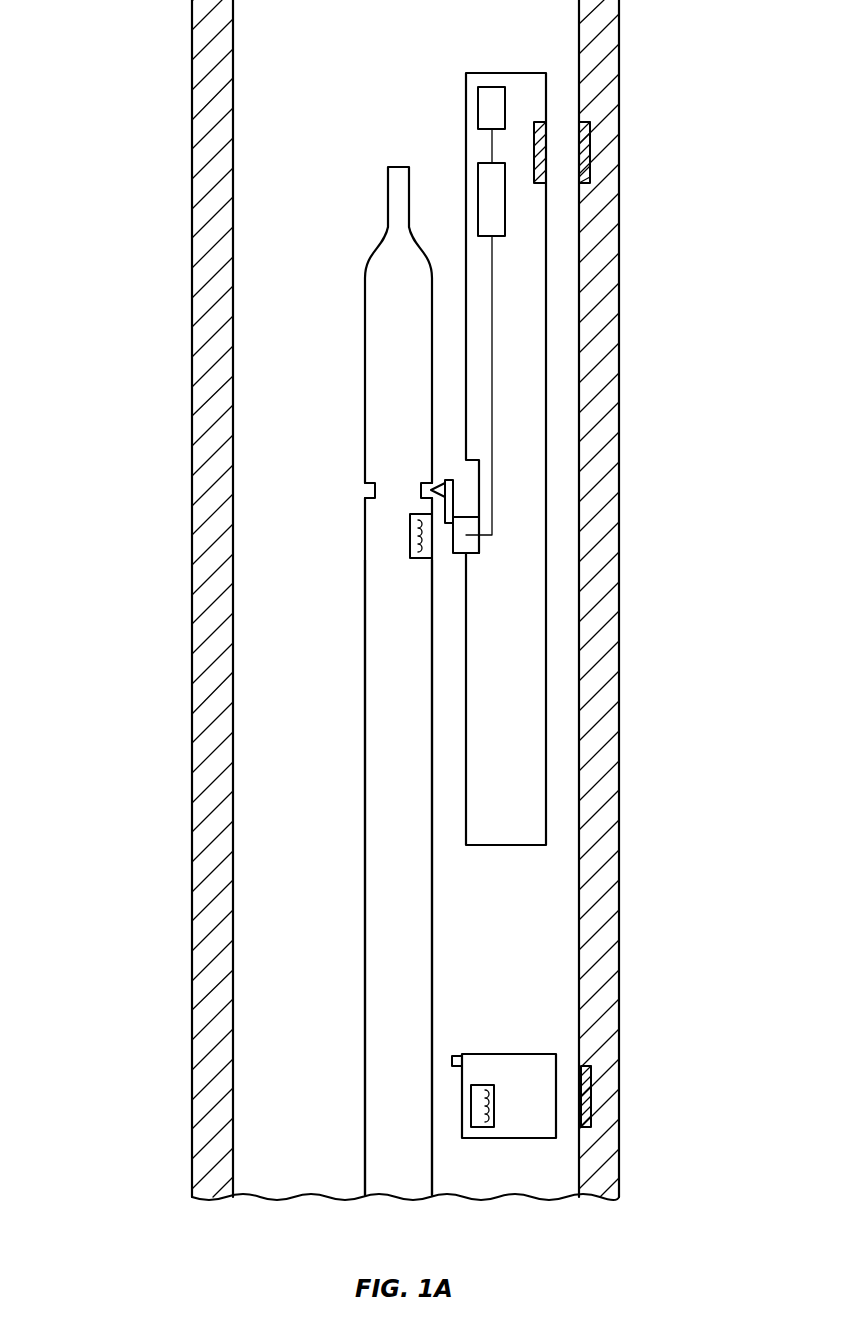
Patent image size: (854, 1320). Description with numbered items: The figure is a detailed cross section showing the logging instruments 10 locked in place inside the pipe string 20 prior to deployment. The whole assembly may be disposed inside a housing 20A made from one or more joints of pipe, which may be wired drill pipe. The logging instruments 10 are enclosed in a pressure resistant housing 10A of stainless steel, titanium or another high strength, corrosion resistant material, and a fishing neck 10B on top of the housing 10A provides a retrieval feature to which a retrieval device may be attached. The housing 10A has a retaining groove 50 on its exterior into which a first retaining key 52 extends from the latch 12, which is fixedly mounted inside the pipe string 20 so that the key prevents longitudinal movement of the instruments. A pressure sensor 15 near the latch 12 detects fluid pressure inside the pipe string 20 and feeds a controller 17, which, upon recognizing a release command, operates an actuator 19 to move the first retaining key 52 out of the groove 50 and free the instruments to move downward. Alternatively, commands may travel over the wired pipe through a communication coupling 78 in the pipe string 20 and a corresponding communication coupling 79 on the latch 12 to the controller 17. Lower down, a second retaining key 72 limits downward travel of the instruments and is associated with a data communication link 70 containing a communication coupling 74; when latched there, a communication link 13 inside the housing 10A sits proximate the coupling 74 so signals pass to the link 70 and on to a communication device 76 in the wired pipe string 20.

The logging instruments 10 is at (365, 305).
The pressure resistant housing 10A is at (365, 577).
The fishing neck 10B is at (388, 188).
The latch 12 is at (523, 95).
The communication link 13 is at (428, 560).
The pressure sensor 15 is at (483, 87).
The controller 17 is at (478, 173).
The actuator 19 is at (469, 556).
The pipe string 20 is at (393, 600).
The housing 20A is at (192, 375).
The retaining groove 50 is at (365, 488).
The first retaining key 52 is at (455, 491).
The data communication link 70 is at (558, 1063).
The second retaining key 72 is at (453, 1056).
The communication coupling 74 is at (490, 1120).
The communication device 76 is at (592, 1096).
The communication coupling 78 is at (592, 148).
The communication coupling 79 is at (543, 130).